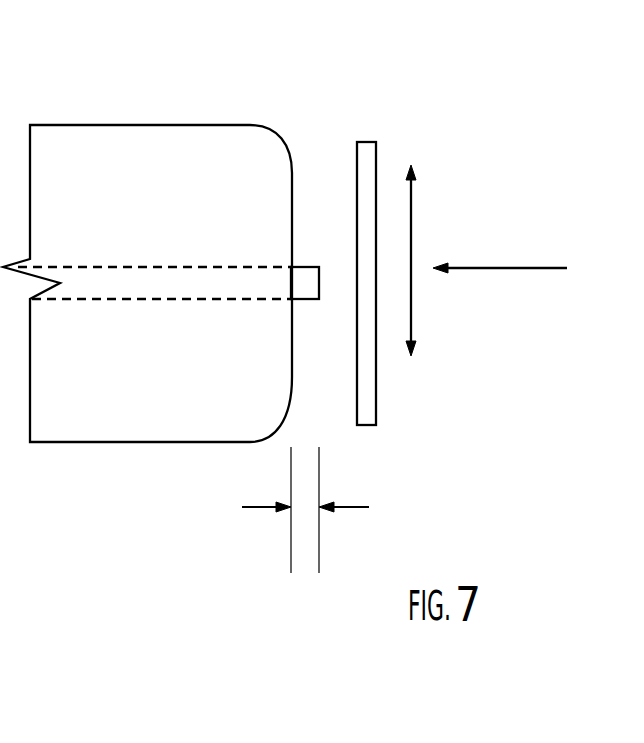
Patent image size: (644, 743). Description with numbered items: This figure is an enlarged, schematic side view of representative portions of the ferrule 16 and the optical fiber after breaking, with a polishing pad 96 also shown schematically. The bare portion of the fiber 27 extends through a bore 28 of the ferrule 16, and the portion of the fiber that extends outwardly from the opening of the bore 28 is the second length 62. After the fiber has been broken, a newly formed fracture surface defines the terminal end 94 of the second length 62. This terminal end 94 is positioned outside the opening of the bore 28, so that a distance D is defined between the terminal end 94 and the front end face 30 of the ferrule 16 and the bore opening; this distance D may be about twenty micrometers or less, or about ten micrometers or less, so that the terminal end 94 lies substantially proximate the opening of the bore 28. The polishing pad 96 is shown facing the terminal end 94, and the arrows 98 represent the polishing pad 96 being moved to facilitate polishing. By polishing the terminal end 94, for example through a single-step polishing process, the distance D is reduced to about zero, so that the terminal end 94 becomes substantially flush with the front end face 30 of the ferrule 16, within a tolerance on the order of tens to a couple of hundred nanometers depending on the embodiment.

The ferrule 16 is at (122, 124).
The bore 28 is at (147, 299).
The fiber 27 is at (307, 267).
The second length 62 is at (284, 154).
The terminal end 94 is at (319, 280).
The polishing pad 96 is at (376, 152).
The arrows 98 is at (411, 220).
The front end face 30 is at (292, 377).
The distance D is at (305, 507).